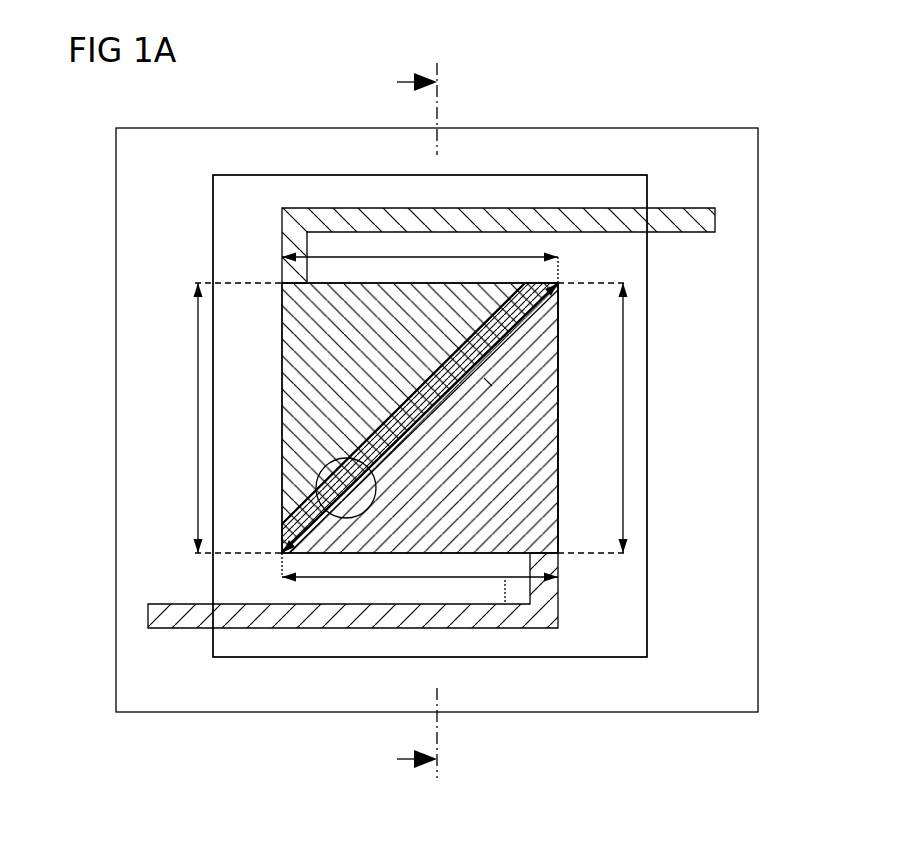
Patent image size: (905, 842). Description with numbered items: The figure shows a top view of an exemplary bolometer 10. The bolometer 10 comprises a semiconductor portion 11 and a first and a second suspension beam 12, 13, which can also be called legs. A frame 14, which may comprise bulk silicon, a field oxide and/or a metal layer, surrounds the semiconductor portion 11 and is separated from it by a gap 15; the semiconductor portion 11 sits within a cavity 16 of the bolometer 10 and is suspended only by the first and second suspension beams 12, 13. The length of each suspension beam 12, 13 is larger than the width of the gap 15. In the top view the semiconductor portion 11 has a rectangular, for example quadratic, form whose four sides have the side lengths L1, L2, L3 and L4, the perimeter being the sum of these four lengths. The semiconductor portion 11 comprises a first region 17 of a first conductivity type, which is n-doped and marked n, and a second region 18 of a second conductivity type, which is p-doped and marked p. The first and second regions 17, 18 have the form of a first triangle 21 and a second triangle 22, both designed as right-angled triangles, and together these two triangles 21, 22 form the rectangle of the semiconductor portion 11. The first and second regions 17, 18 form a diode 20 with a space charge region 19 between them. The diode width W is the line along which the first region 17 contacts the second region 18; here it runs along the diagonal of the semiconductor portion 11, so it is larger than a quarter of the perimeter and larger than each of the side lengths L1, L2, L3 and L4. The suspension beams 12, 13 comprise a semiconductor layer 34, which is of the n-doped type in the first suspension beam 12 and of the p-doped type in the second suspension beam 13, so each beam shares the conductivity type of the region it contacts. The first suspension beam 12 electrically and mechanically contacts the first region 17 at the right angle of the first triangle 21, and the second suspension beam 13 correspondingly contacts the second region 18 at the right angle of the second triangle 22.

The bolometer 10 is at (346, 107).
The semiconductor portion 11 is at (420, 398).
The first suspension beam 12 is at (338, 208).
The second suspension beam 13 is at (322, 630).
The frame 14 is at (135, 460).
The gap 15 is at (226, 261).
The cavity 16 is at (645, 420).
The first region 17 is at (282, 445).
The second region 18 is at (558, 473).
The space charge region 19 is at (362, 498).
The diode 20 is at (558, 284).
The first triangle 21 is at (290, 412).
The second triangle 22 is at (540, 433).
The semiconductor layer 34 is at (431, 420).
The first side length L1 is at (496, 257).
The second side length L2 is at (623, 366).
The third side length L3 is at (492, 630).
The fourth side length L4 is at (198, 353).
The diode width W is at (484, 378).
The n-doped conductivity type n is at (549, 218).
The p-doped conductivity type p is at (386, 618).